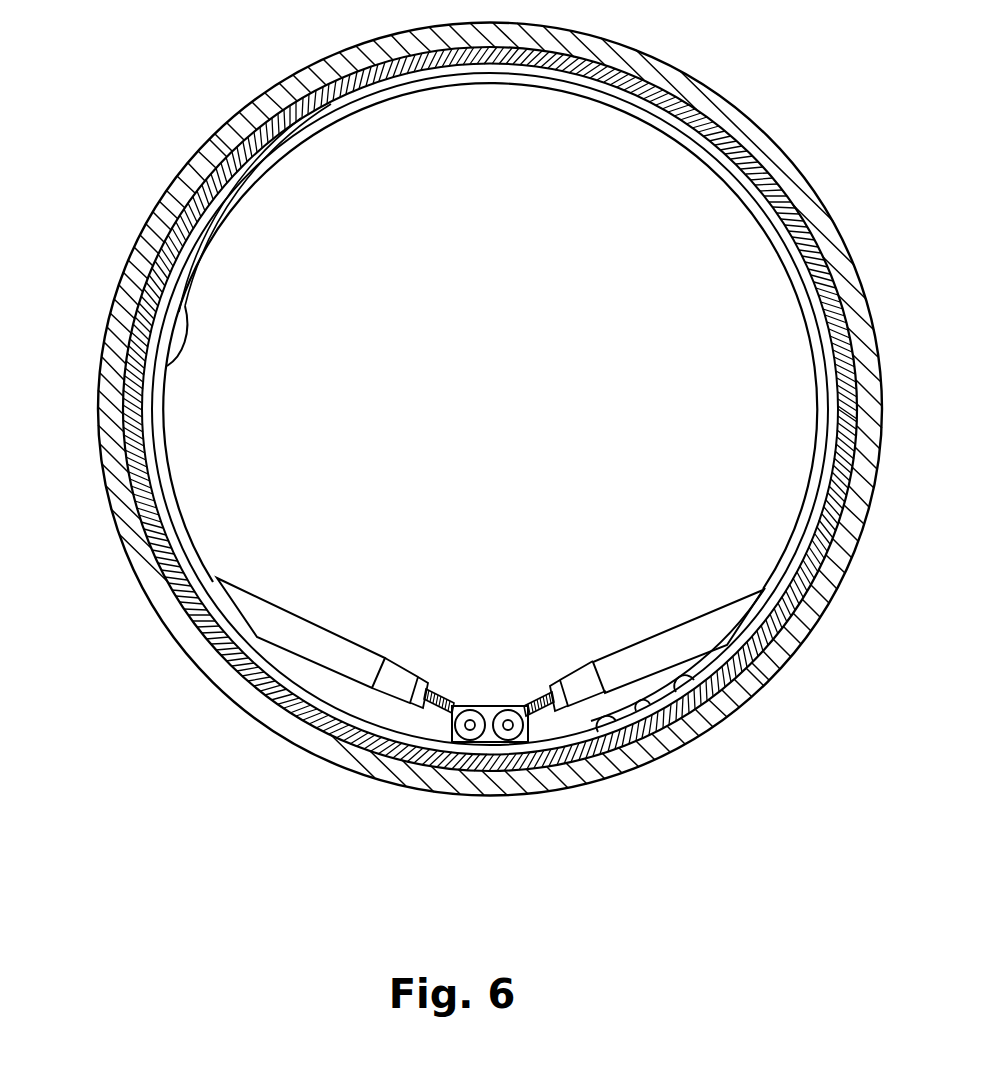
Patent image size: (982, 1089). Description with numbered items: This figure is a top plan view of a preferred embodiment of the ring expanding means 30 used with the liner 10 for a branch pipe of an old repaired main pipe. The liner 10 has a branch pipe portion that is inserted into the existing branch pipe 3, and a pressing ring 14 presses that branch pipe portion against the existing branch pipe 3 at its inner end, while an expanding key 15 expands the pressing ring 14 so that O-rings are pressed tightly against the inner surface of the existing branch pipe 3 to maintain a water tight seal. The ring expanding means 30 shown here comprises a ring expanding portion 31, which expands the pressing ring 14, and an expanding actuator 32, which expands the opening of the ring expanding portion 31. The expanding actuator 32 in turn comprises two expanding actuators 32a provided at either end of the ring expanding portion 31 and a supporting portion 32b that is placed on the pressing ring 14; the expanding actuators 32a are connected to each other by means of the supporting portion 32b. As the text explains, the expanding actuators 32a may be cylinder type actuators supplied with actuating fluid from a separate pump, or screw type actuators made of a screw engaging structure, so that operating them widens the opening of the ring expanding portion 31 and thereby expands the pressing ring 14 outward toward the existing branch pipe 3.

The existing branch pipe 3 is at (413, 792).
The liner 10 is at (733, 680).
The pressing ring 14 is at (676, 700).
The expanding key 15 is at (602, 728).
The ring expanding means 30 is at (441, 613).
The ring expanding portion 31 is at (183, 307).
The expanding actuator 32 is at (490, 703).
The expanding actuators 32a is at (301, 618).
The supporting portion 32b is at (497, 705).